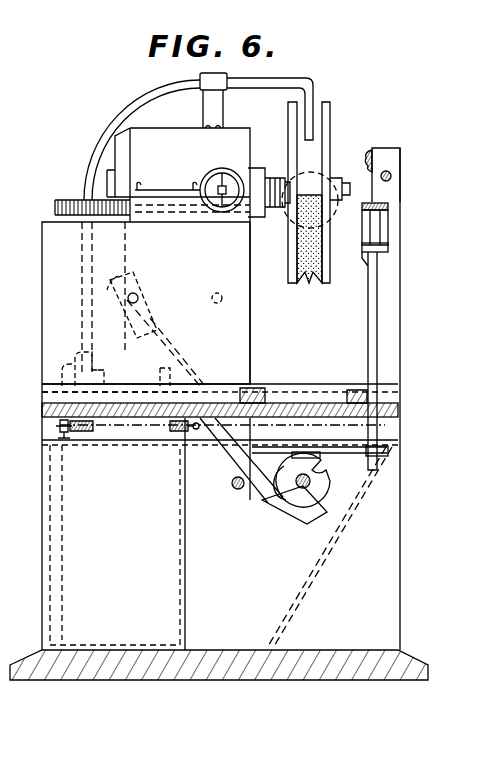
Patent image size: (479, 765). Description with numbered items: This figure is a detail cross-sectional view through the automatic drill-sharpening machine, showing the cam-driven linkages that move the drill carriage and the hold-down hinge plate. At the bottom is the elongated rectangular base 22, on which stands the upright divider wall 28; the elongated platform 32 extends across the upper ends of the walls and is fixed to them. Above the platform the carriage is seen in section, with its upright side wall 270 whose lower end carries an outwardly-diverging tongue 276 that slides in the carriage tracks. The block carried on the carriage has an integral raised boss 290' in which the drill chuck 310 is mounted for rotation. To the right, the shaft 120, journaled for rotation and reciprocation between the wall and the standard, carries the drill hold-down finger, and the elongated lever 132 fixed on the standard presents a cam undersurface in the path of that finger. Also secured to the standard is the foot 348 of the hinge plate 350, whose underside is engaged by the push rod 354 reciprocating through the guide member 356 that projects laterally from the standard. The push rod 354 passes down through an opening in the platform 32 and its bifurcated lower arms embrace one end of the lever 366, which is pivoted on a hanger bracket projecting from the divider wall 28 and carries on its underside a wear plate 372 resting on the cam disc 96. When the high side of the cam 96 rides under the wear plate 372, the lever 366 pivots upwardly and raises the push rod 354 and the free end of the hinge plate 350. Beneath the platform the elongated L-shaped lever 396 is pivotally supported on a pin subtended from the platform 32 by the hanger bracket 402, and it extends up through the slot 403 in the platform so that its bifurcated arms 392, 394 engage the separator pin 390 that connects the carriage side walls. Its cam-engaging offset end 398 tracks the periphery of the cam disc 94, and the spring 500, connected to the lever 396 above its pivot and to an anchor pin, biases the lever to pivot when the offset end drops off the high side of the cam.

The base 22 is at (302, 680).
The divider wall 28 is at (390, 575).
The platform 32 is at (400, 412).
The cam disc 94 is at (318, 468).
The cam disc 96 is at (285, 485).
The shaft 120 is at (392, 178).
The lever 132 is at (374, 150).
The side wall 270 is at (48, 296).
The tongue 276 is at (42, 406).
The raised boss 290' is at (146, 179).
The drill chuck 310 is at (238, 173).
The foot 348 is at (390, 232).
The hinge plate 350 is at (390, 206).
The push rod 354 is at (378, 338).
The guide member 356 is at (390, 250).
The lever 366 is at (392, 450).
The wear plate 372 is at (312, 440).
The separator pin 390 is at (150, 298).
The bifurcated arm 392 is at (140, 290).
The bifurcated arm 394 is at (116, 276).
The L-shaped lever 396 is at (213, 460).
The cam-engaging offset end 398 is at (298, 522).
The hanger bracket 402 is at (252, 445).
The slot 403 is at (203, 384).
The spring 500 is at (95, 432).